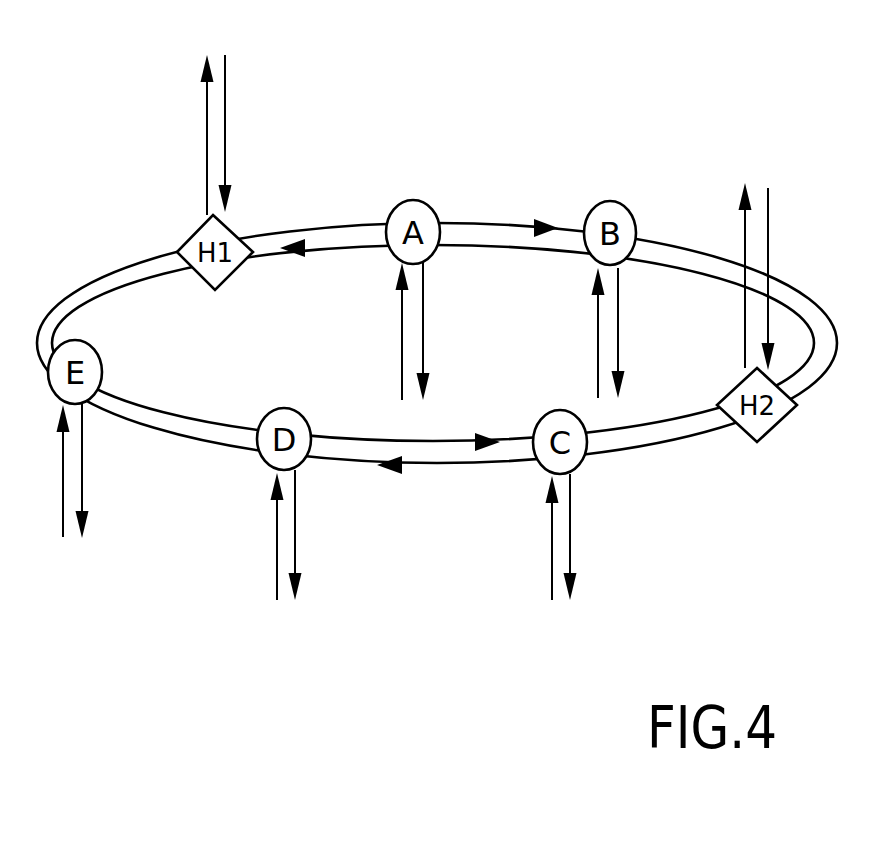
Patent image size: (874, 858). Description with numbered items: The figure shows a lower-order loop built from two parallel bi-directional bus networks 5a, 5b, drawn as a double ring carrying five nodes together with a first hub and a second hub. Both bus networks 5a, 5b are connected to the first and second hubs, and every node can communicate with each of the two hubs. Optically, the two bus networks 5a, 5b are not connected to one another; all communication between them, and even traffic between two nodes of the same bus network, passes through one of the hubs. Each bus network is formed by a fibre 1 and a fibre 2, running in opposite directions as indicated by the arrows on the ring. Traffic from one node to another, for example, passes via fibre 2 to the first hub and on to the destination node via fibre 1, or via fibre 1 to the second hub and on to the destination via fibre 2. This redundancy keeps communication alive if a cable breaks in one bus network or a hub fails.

The fibre 1 is at (315, 223).
The fibre 2 is at (365, 245).
The bi-directional bus network 5a is at (521, 189).
The bi-directional bus network 5b is at (448, 502).